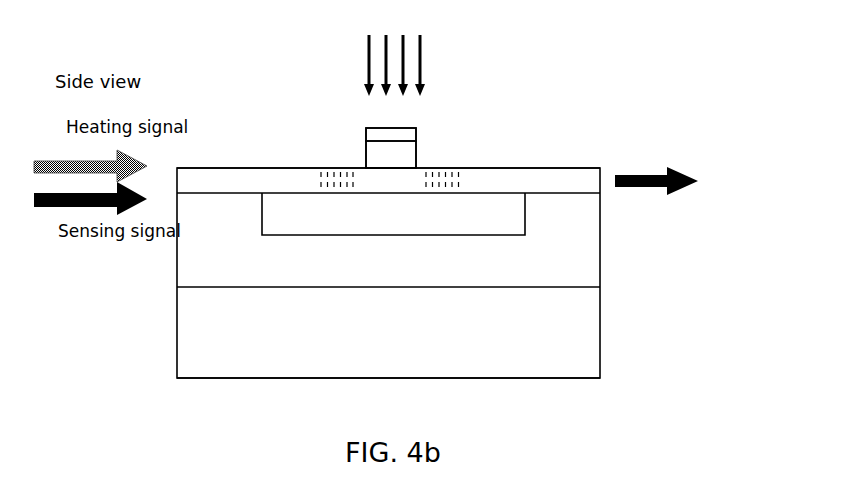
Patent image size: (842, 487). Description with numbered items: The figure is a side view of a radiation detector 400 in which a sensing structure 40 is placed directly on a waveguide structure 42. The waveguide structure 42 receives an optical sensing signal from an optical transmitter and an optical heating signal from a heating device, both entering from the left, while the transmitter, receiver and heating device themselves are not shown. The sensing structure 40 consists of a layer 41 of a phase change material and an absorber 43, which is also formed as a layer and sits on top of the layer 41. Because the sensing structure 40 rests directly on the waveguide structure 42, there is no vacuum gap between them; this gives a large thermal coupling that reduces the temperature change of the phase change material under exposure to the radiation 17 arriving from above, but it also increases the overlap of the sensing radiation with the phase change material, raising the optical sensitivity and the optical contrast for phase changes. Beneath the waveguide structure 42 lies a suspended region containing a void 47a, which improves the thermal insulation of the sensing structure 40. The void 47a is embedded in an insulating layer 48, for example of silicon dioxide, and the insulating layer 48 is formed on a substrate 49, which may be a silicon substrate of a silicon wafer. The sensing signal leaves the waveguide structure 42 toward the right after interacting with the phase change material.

The radiation detector 400 is at (798, 442).
The waveguide structure 42 is at (553, 185).
The void 47a is at (525, 218).
The insulating layer 48 is at (184, 267).
The substrate 49 is at (184, 342).
The sensing structure 40 is at (433, 125).
The absorber 43 is at (378, 135).
The layer of phase change material 41 is at (378, 155).
The radiation 17 is at (423, 58).